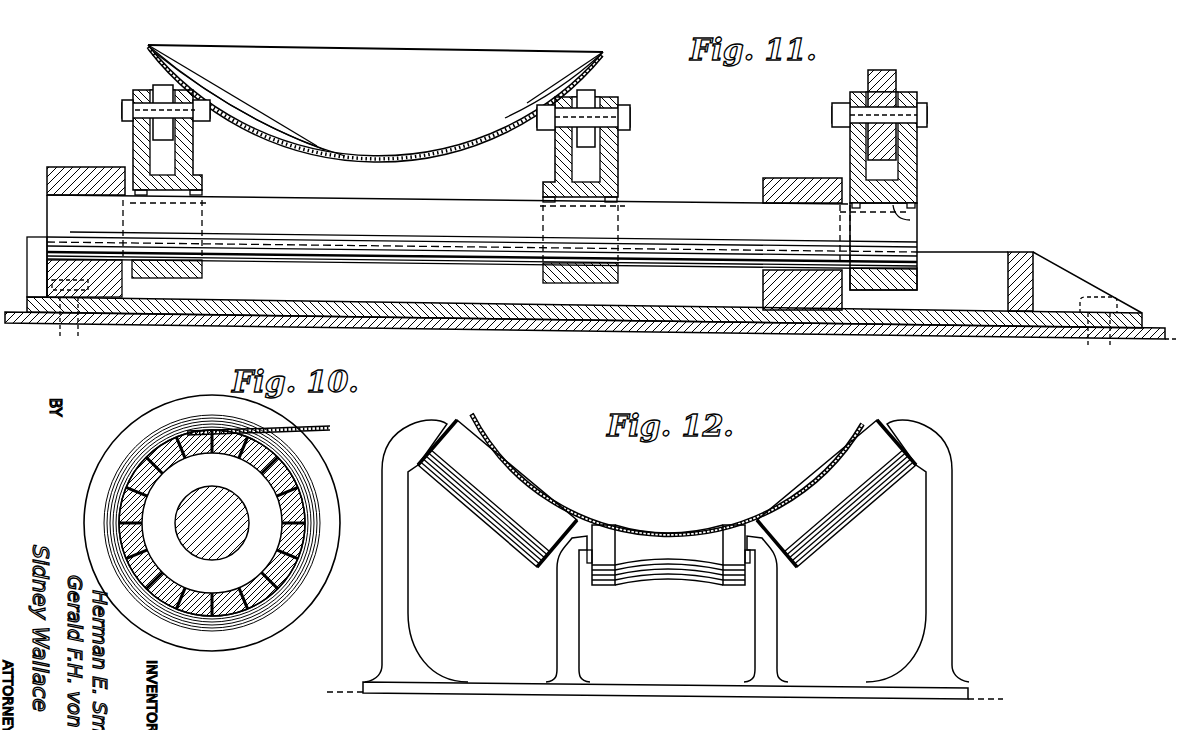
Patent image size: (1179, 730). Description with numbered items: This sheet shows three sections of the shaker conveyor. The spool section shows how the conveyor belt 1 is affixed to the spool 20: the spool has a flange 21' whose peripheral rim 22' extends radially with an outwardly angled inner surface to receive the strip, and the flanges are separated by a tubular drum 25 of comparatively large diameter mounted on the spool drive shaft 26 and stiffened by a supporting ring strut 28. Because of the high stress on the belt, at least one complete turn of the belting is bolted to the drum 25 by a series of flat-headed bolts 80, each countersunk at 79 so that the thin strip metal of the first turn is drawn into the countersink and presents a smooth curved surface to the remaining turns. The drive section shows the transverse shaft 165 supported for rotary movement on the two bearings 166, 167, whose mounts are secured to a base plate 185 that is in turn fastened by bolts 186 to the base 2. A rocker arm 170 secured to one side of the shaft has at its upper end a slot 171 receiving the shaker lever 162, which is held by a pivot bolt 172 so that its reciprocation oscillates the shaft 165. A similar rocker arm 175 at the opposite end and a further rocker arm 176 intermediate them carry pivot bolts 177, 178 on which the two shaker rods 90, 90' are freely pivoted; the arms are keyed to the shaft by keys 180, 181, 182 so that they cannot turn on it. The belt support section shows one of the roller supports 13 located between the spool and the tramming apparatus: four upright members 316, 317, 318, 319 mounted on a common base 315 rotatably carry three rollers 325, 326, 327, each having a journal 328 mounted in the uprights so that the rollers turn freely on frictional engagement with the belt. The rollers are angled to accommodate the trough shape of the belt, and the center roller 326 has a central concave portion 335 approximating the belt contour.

In FIG. 11, the conveyor belt 1 is at (414, 150).
In FIG. 10, the conveyor belt 1 is at (330, 426).
In FIG. 12, the conveyor belt 1 is at (632, 520).
In FIG. 11, the base 2 is at (852, 330).
In FIG. 12, the roller supports 13 is at (679, 541).
In FIG. 10, the spool 20 is at (243, 655).
In FIG. 10, the flange 21' is at (212, 546).
In FIG. 10, the peripheral rim 22' is at (232, 523).
In FIG. 10, the drum 25 is at (281, 493).
In FIG. 10, the spool drive shaft 26 is at (249, 524).
In FIG. 10, the supporting ring strut 28 is at (132, 467).
In FIG. 10, the countersink 79 is at (302, 473).
In FIG. 10, the bolts 80 is at (137, 497).
In FIG. 11, the shaker rod 90 is at (153, 103).
In FIG. 11, the shaker rod 90' is at (600, 107).
In FIG. 11, the shaker lever 162 is at (898, 80).
In FIG. 11, the transverse shaft 165 is at (326, 205).
In FIG. 11, the bearing 166 is at (90, 163).
In FIG. 11, the bearing 167 is at (790, 176).
In FIG. 11, the rocker arm 170 is at (918, 192).
In FIG. 11, the slot 171 is at (898, 174).
In FIG. 11, the pivot bolt 172 is at (929, 113).
In FIG. 11, the rocker arm 175 is at (205, 191).
In FIG. 11, the rocker arm 176 is at (620, 193).
In FIG. 11, the pivot bolt 177 is at (125, 110).
In FIG. 11, the pivot bolt 178 is at (630, 118).
In FIG. 11, the key 180 is at (918, 222).
In FIG. 11, the key 181 is at (552, 183).
In FIG. 11, the key 182 is at (197, 185).
In FIG. 11, the base plate 185 is at (942, 315).
In FIG. 11, the bolts 186 is at (1100, 298).
In FIG. 12, the common base 315 is at (417, 690).
In FIG. 12, the upright member 316 is at (408, 598).
In FIG. 12, the upright member 317 is at (570, 634).
In FIG. 12, the upright member 318 is at (778, 631).
In FIG. 12, the upright member 319 is at (950, 592).
In FIG. 12, the roller 325 is at (476, 518).
In FIG. 12, the roller 326 is at (613, 587).
In FIG. 12, the roller 327 is at (834, 540).
In FIG. 12, the journal 328 is at (882, 425).
In FIG. 12, the central concave portion 335 is at (676, 582).